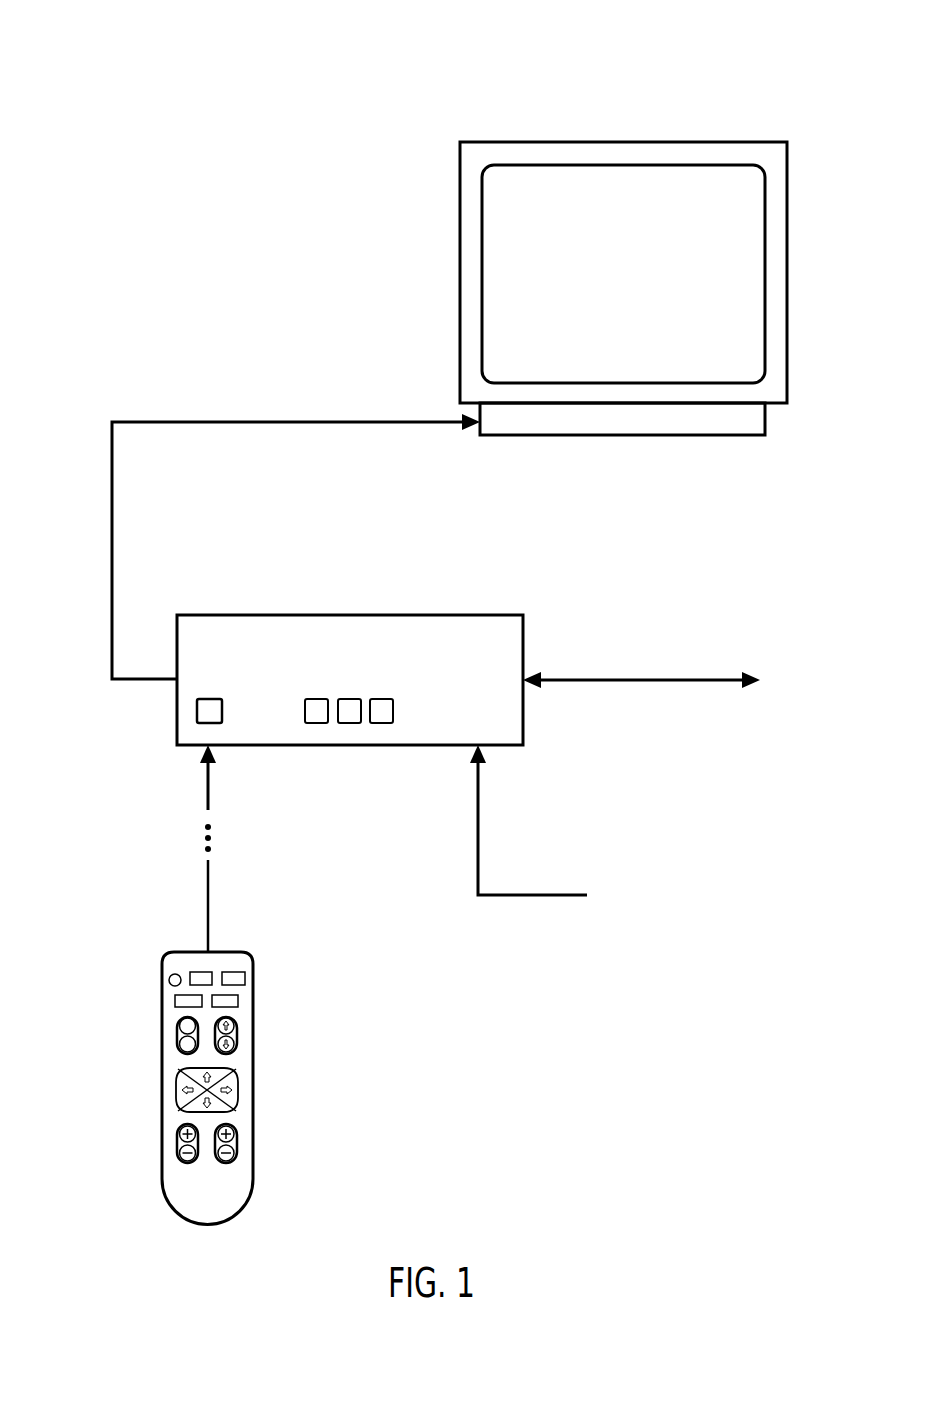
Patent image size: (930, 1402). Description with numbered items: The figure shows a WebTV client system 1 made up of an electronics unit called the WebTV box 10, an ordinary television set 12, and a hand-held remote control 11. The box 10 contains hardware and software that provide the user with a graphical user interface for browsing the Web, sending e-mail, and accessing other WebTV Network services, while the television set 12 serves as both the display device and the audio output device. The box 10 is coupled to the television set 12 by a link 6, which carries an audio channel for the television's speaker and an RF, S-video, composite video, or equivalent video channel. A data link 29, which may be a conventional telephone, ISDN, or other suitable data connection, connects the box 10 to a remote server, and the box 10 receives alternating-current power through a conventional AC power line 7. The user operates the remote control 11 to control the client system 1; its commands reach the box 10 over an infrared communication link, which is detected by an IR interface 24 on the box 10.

The WebTV client system 1 is at (758, 78).
The television set 12 is at (748, 365).
The link 6 is at (112, 522).
The WebTV box 10 is at (510, 735).
The IR interface 24 is at (222, 710).
The data link 29 is at (577, 678).
The AC power line 7 is at (552, 897).
The remote control 11 is at (220, 1213).